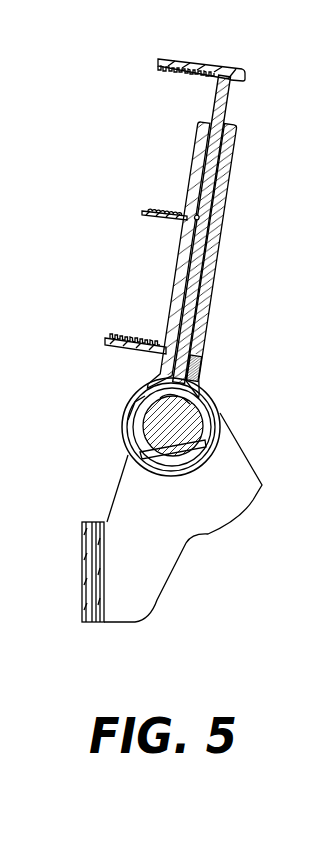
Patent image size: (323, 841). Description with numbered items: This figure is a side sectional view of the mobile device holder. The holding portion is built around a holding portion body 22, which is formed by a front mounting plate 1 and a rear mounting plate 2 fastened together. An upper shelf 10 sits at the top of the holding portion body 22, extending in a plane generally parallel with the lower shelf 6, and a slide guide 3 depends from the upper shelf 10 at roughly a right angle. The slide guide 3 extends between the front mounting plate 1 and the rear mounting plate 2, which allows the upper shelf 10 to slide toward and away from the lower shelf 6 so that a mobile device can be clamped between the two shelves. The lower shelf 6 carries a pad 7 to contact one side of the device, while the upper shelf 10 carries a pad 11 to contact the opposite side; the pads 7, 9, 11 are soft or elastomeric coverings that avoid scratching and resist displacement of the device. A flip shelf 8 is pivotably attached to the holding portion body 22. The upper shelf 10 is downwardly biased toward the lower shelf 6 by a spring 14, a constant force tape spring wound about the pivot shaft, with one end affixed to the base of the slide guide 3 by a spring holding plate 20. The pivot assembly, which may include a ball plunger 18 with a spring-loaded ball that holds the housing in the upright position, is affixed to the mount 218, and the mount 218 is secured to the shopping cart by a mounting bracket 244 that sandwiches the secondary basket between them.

The front mounting plate 1 is at (190, 142).
The rear mounting plate 2 is at (214, 236).
The slide guide 3 is at (233, 100).
The lower shelf 6 is at (150, 349).
The pad 7 is at (125, 333).
The flip shelf 8 is at (143, 218).
The pad 9 is at (150, 209).
The upper shelf 10 is at (198, 61).
The pad 11 is at (157, 70).
The spring 14 is at (221, 438).
The ball plunger 18 is at (189, 403).
The spring holding plate 20 is at (204, 352).
The holding portion body 22 is at (228, 178).
The mount 218 is at (143, 572).
The mounting bracket 244 is at (81, 578).